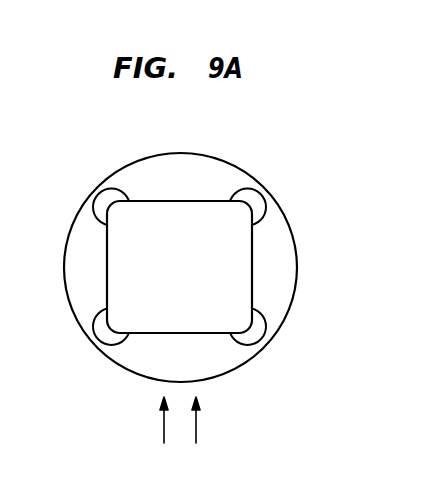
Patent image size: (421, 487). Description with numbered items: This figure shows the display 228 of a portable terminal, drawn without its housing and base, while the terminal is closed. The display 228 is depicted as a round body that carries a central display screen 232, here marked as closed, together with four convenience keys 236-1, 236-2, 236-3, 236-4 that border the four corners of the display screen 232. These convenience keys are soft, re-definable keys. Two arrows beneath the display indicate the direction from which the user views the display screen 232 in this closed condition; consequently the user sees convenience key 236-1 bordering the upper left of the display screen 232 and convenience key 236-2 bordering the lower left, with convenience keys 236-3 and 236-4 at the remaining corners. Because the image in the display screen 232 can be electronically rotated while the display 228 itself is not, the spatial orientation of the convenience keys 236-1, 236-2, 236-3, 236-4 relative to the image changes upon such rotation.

The display 228 is at (186, 153).
The display screen 232 is at (145, 213).
The convenience key 236-1 is at (99, 198).
The convenience key 236-2 is at (100, 336).
The convenience key 236-3 is at (260, 336).
The convenience key 236-4 is at (258, 200).